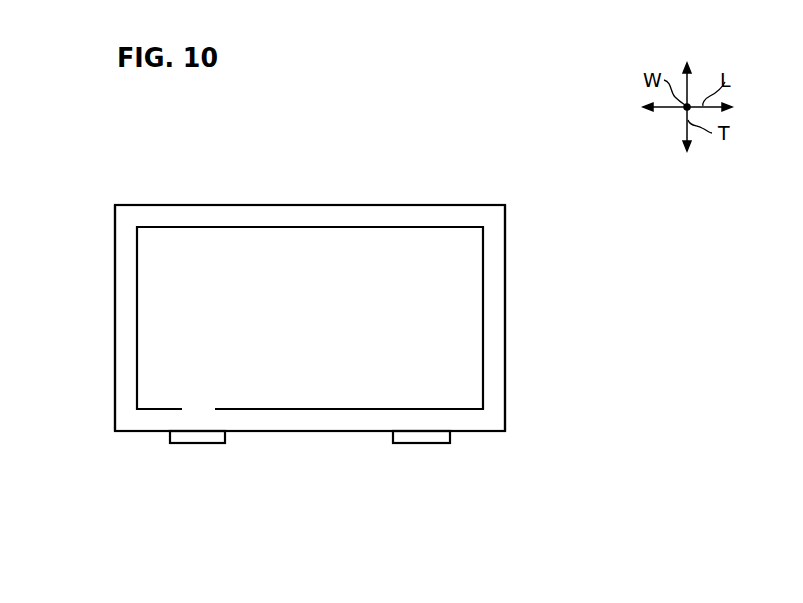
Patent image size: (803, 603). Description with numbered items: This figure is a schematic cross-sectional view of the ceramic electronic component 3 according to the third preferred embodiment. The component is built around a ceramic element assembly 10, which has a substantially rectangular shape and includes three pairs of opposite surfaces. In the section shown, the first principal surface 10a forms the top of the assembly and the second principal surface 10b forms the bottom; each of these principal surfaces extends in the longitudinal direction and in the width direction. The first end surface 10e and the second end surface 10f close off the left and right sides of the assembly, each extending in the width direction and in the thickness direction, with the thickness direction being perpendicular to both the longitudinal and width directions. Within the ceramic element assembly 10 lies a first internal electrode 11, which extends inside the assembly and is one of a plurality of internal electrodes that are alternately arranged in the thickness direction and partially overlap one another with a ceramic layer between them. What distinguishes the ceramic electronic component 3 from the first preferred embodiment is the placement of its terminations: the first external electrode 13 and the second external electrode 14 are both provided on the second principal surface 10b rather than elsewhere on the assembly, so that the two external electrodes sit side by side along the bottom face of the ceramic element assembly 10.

The ceramic electronic component 3 is at (532, 173).
The ceramic element assembly 10 is at (329, 205).
The first principal surface 10a is at (281, 204).
The second principal surface 10b is at (302, 432).
The first end surface 10e is at (114, 323).
The second end surface 10f is at (506, 308).
The first internal electrode 11 is at (483, 360).
The first external electrode 13 is at (191, 444).
The second external electrode 14 is at (422, 444).